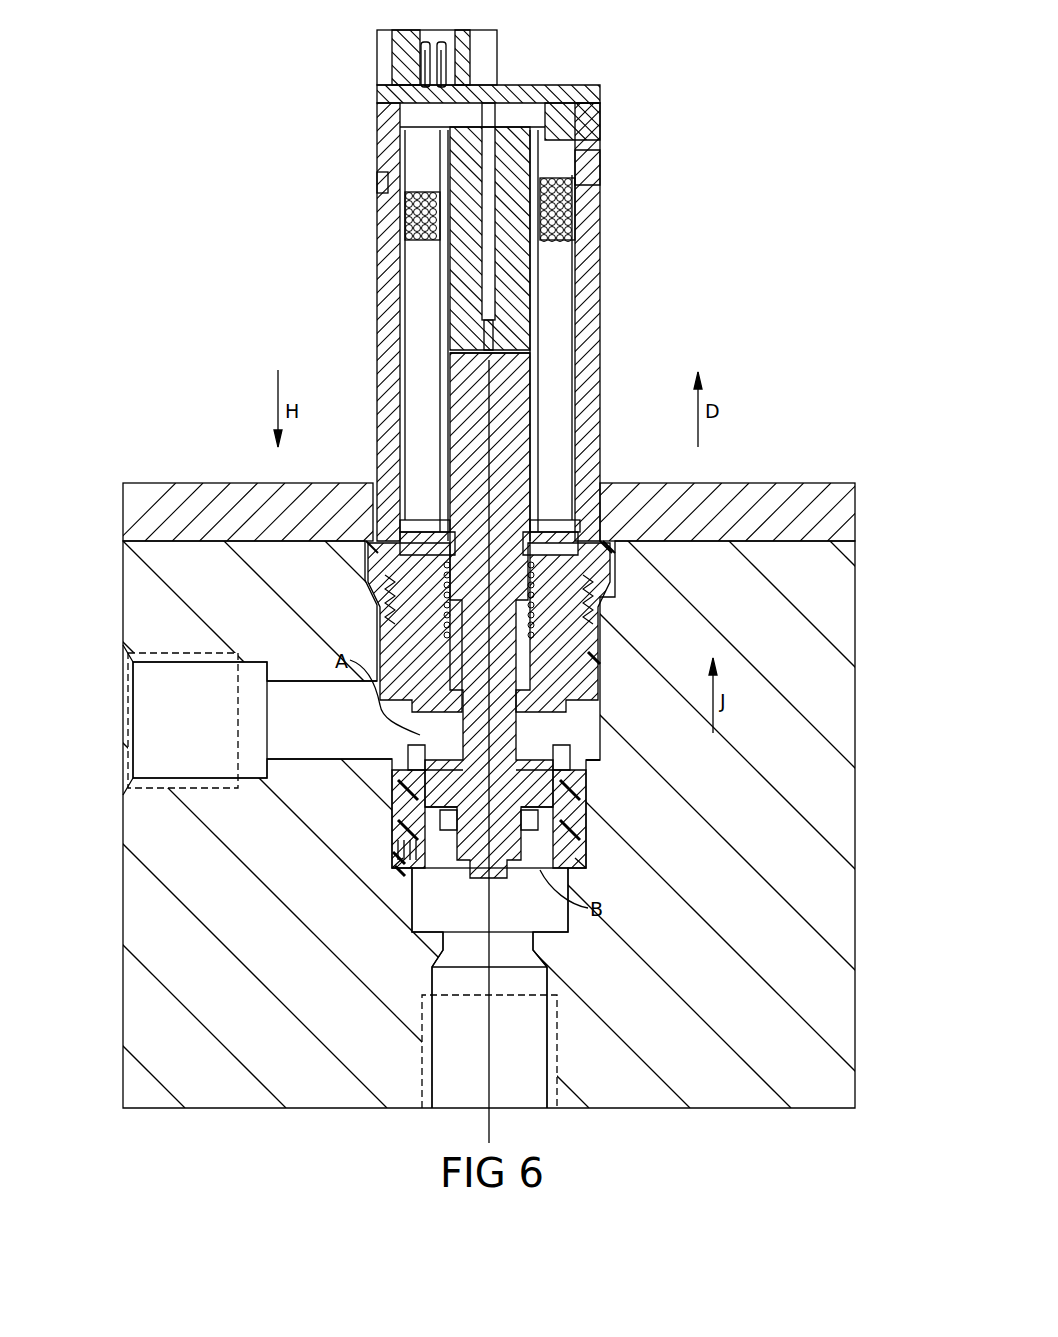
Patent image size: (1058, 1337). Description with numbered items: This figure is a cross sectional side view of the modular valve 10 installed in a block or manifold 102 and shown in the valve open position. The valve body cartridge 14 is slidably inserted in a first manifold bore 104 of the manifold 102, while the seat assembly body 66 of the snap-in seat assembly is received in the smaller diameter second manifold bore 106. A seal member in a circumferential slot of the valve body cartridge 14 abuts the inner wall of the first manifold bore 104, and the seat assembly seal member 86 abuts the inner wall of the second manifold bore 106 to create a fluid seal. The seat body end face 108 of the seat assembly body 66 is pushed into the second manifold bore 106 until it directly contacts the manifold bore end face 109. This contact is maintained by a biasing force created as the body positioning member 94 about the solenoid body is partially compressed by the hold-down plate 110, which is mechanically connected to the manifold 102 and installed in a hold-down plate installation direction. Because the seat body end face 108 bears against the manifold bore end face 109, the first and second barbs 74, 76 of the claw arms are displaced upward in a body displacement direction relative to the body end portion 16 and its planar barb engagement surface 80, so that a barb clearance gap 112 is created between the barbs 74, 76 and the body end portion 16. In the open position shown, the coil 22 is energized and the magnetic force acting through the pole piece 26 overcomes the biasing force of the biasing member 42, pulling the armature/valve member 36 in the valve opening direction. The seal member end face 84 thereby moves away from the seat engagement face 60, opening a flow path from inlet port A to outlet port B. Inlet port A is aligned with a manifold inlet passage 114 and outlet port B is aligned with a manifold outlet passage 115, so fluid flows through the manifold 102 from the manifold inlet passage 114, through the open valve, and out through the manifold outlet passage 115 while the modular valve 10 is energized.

The modular valve 10 is at (672, 237).
The valve body cartridge 14 is at (598, 690).
The body end portion 16 is at (582, 800).
The coil 22 is at (407, 235).
The pole piece 26 is at (462, 325).
The armature/valve member 36 is at (530, 415).
The biasing member 42 is at (588, 578).
The seat engagement face 60 is at (565, 868).
The seat assembly body 66 is at (587, 845).
The first barb 74 is at (420, 735).
The second barb 76 is at (590, 730).
The barb engagement surface 80 is at (408, 770).
The seal member end face 84 is at (445, 825).
The seat assembly seal member 86 is at (395, 838).
The body positioning member 94 is at (603, 540).
The manifold 102 is at (835, 960).
The first manifold bore 104 is at (587, 700).
The second manifold bore 106 is at (385, 858).
The seat body end face 108 is at (400, 871).
The manifold bore end face 109 is at (590, 850).
The hold-down plate 110 is at (130, 510).
The barb clearance gap 112 is at (598, 760).
The manifold inlet passage 114 is at (148, 712).
The manifold outlet passage 115 is at (520, 1085).